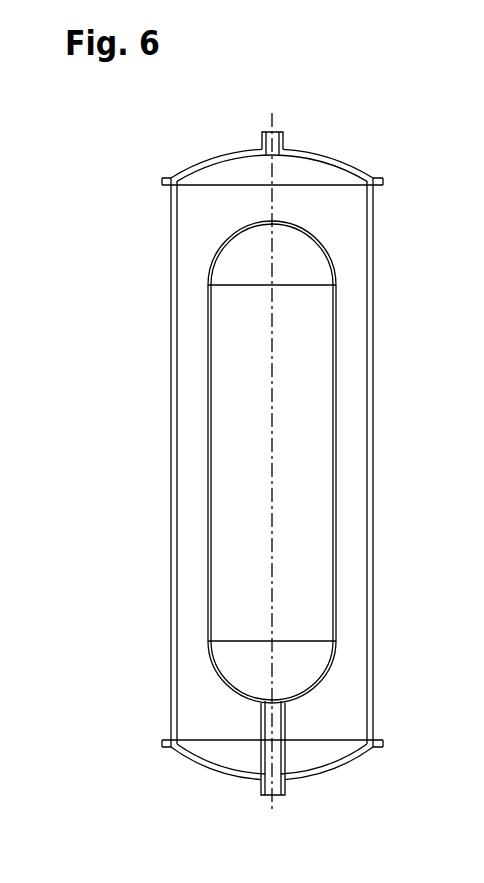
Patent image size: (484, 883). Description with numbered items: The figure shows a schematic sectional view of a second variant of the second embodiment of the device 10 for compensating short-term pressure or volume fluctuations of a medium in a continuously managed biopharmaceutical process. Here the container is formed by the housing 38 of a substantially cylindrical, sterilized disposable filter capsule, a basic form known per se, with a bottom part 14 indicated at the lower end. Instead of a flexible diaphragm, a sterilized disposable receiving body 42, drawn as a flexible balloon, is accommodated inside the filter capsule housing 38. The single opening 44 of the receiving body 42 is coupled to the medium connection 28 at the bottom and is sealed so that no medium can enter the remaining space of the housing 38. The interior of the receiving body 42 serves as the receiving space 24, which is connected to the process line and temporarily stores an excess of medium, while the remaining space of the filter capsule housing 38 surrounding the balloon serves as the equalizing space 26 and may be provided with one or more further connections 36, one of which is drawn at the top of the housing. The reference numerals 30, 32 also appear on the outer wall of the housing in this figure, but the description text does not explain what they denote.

The device 10 is at (355, 137).
The bottom part 14 is at (165, 352).
The filter capsule housing 38 is at (233, 462).
The further connection 36 is at (262, 140).
The equalizing space 26 is at (218, 233).
The insulation layer 30 is at (195, 390).
The annular gap 32 is at (95, 388).
The receiving body 42 is at (208, 560).
The receiving space 24 is at (255, 522).
The single opening 44 is at (268, 731).
The connection 28 is at (261, 779).